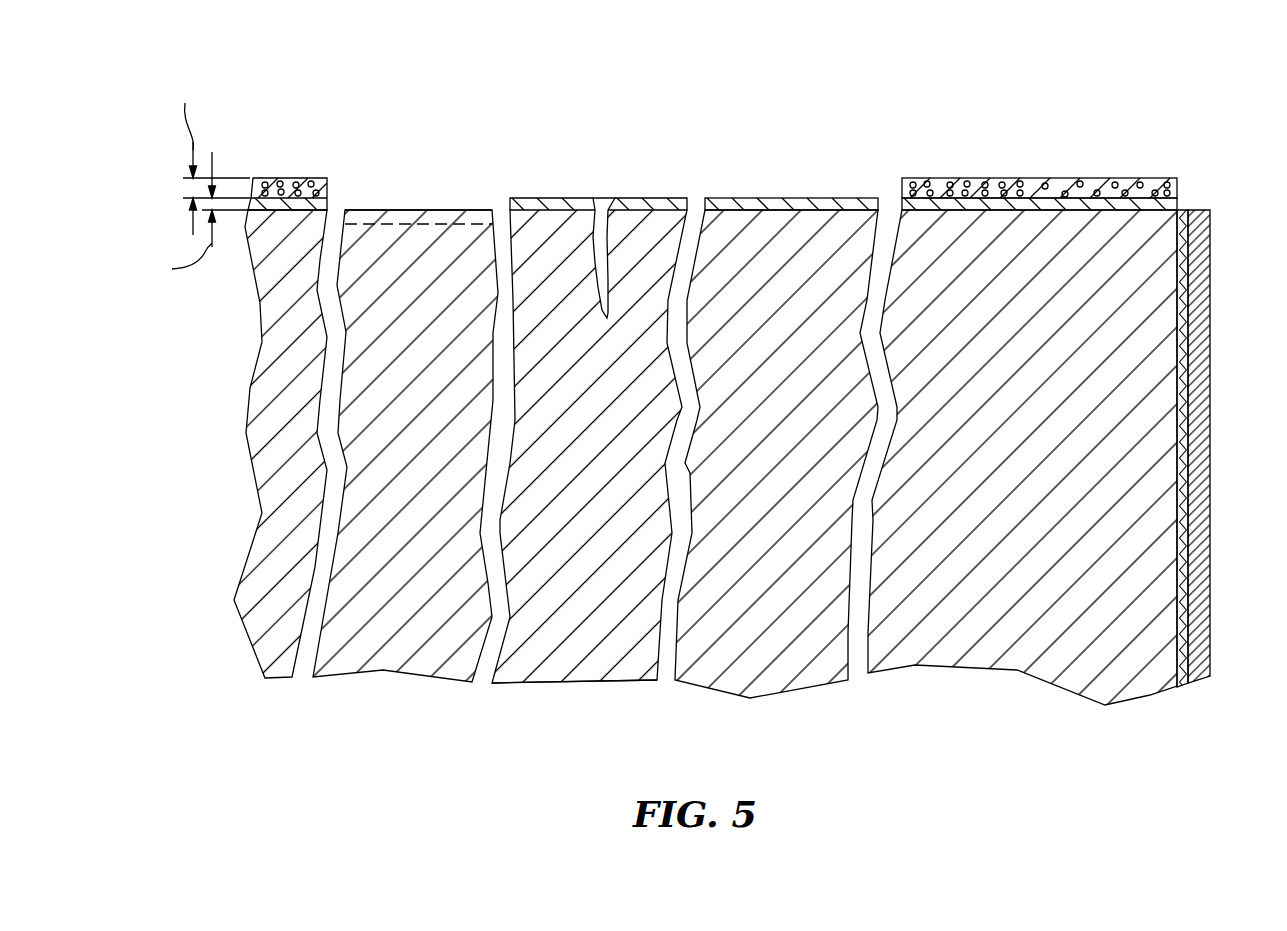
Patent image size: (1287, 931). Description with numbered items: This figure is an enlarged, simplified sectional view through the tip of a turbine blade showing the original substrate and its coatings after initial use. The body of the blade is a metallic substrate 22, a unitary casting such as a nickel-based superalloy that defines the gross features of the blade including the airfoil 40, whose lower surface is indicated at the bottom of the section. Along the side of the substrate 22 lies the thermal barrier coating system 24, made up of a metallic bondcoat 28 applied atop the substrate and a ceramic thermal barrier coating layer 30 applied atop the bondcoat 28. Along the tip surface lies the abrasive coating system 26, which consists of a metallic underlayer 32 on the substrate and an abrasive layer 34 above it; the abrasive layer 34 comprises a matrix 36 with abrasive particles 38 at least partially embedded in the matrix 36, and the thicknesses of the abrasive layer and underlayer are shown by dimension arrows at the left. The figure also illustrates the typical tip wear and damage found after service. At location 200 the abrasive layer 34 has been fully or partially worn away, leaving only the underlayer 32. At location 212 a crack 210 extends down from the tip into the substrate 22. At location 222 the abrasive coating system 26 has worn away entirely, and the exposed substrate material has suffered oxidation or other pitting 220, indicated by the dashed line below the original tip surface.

The location of worn-away abrasive layer 200 is at (774, 134).
The metallic substrate 22 is at (622, 663).
The thermal barrier coating system 24 is at (1210, 698).
The abrasive coating system 26 is at (168, 170).
The metallic bondcoat 28 is at (1188, 505).
The ceramic thermal barrier coating layer 30 is at (1200, 446).
The metallic underlayer 32 is at (830, 198).
The abrasive layer 34 is at (1092, 176).
The matrix 36 is at (1060, 197).
The abrasive particles 38 is at (1139, 177).
The airfoil 40 is at (550, 720).
The crack 210 is at (590, 294).
The location of crack 212 is at (608, 180).
The oxidation or pitting 220 is at (421, 208).
The location of oxidation or pitting 222 is at (468, 170).